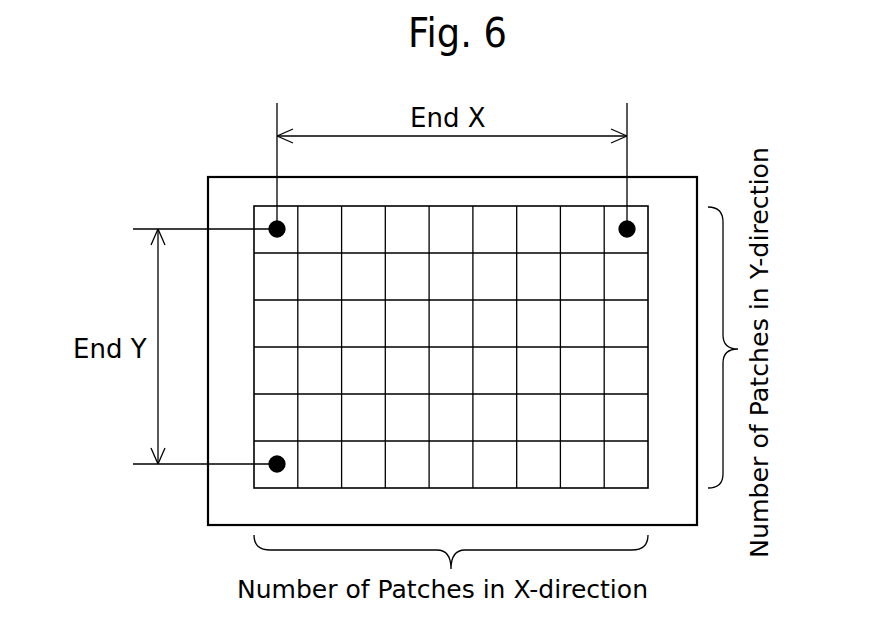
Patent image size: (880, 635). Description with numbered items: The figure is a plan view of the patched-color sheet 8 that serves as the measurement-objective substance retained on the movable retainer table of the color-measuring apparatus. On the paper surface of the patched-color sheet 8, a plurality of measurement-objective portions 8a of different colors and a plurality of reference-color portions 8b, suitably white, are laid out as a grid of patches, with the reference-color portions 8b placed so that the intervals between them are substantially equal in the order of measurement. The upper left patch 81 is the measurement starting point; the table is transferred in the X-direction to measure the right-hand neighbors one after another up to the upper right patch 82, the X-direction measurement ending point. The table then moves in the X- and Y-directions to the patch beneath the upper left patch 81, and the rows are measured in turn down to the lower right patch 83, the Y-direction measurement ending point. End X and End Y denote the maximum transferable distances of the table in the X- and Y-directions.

The patched-color sheet 8 is at (688, 178).
The measurement-objective portions 8a is at (365, 225).
The reference-color portions 8b is at (260, 217).
The upper left patch 81 is at (285, 217).
The upper right patch 82 is at (638, 215).
The lower right patch 83 is at (626, 472).